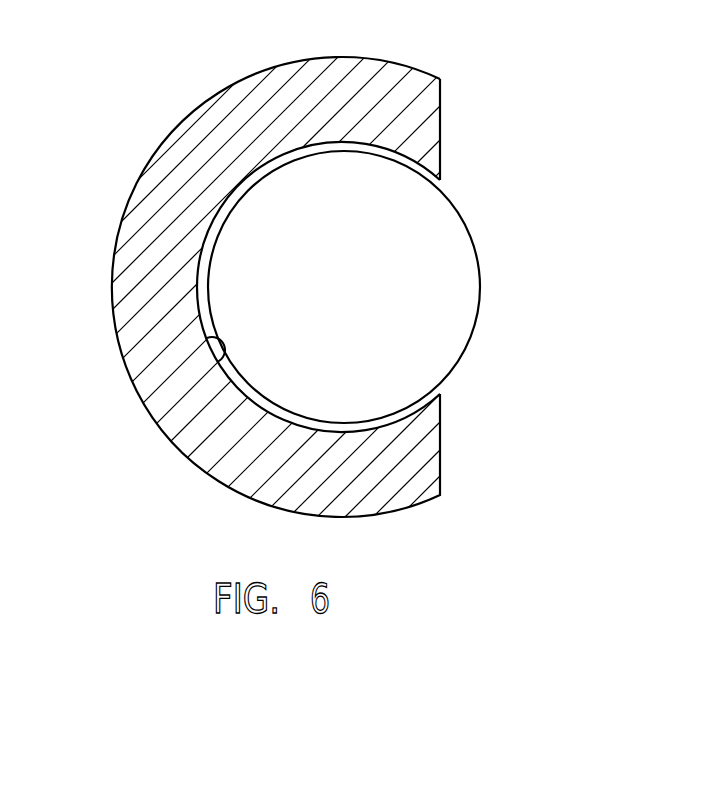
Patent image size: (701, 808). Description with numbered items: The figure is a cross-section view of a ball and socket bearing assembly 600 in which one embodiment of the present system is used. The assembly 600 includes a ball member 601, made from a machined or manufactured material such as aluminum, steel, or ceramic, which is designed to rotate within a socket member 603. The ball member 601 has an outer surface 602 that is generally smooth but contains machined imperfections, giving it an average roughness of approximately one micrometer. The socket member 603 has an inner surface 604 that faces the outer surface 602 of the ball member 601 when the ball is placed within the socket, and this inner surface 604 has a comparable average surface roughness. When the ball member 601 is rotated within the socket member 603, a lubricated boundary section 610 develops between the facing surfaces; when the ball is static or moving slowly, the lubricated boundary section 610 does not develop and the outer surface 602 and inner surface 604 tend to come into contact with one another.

The ball and socket bearing assembly 600 is at (328, 281).
The ball member 601 is at (463, 350).
The outer surface 602 is at (460, 218).
The socket member 603 is at (231, 487).
The inner surface 604 is at (216, 363).
The lubricated boundary section 610 is at (200, 307).